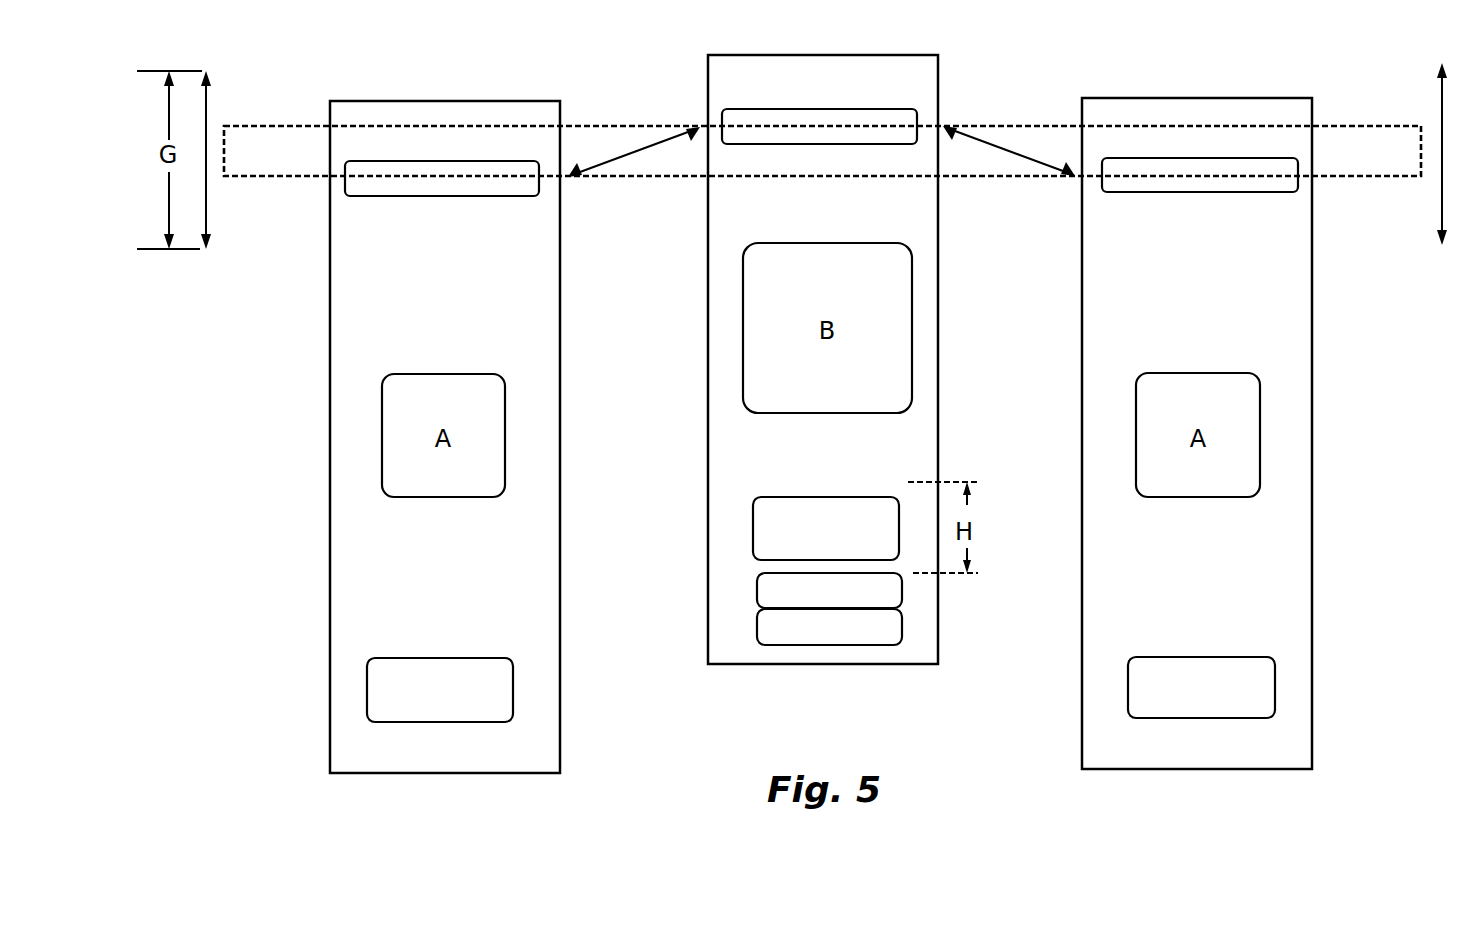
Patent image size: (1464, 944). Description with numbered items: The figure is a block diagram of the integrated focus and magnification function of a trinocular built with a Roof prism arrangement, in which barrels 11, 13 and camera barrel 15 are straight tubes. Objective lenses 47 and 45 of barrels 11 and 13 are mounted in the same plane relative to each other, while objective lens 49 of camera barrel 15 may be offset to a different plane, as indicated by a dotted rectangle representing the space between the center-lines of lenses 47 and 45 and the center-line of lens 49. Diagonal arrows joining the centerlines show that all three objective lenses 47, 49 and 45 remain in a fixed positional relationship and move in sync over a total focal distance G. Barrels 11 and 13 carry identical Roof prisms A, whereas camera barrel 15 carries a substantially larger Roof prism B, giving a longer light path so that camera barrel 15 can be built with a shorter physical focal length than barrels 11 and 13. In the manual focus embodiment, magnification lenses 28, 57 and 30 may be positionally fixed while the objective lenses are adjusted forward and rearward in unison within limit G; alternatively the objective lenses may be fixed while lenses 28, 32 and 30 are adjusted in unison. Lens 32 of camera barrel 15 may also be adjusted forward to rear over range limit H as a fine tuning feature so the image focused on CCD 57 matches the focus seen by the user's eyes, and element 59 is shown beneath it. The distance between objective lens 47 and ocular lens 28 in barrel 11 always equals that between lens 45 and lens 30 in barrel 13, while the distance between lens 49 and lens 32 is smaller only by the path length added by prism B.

The barrel 11 is at (330, 467).
The barrel 13 is at (1082, 348).
The camera barrel 15 is at (708, 332).
The ocular lens 28 is at (367, 700).
The lens 30 is at (1128, 697).
The lens 32 is at (827, 497).
The objective lens 45 is at (1205, 192).
The objective lens 47 is at (442, 196).
The objective lens 49 is at (817, 144).
The CCD 57 is at (757, 592).
The lower window of third panel 59 is at (757, 633).